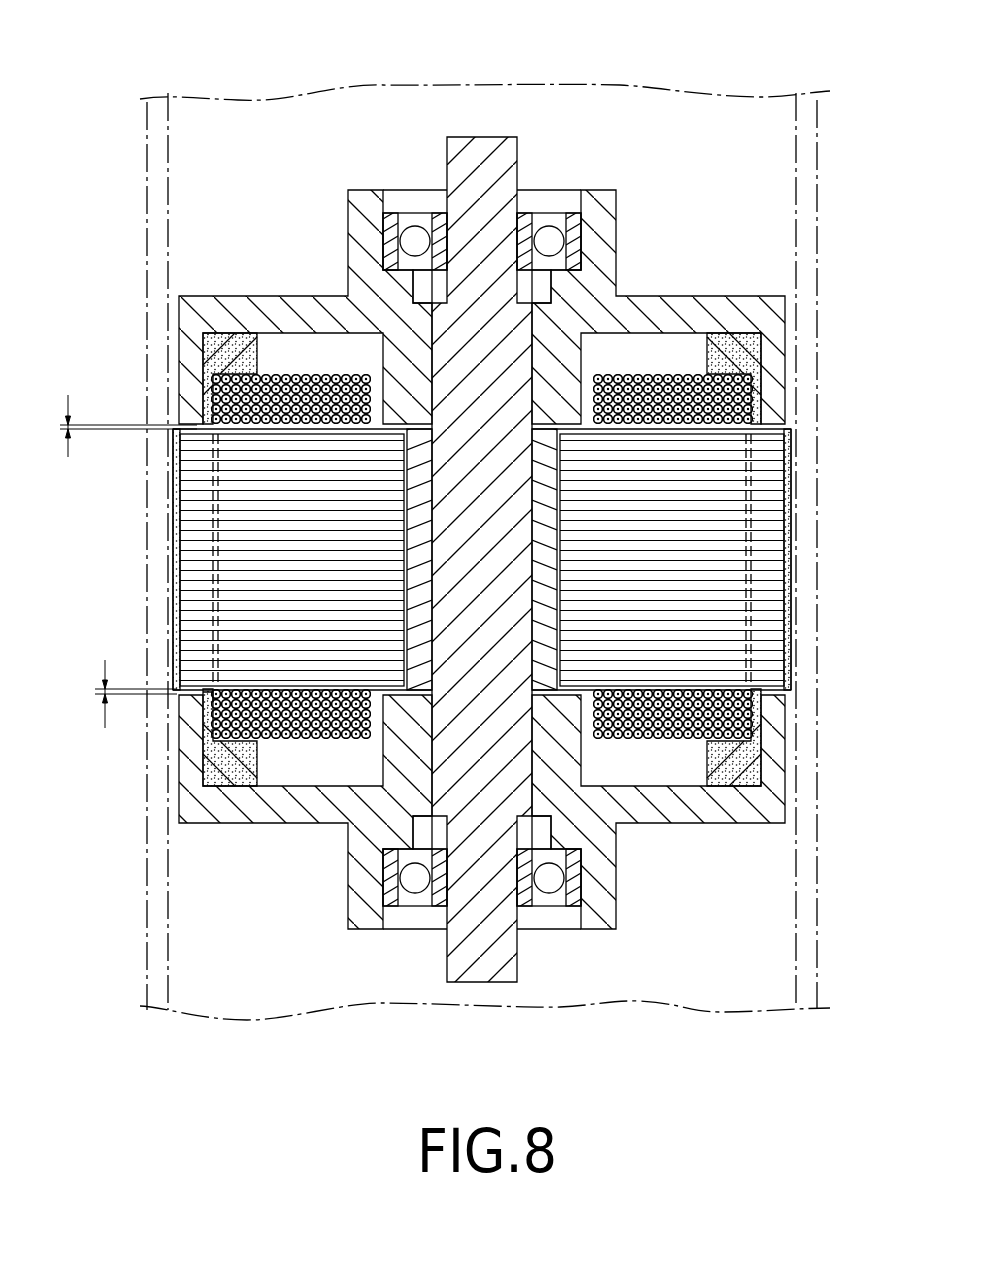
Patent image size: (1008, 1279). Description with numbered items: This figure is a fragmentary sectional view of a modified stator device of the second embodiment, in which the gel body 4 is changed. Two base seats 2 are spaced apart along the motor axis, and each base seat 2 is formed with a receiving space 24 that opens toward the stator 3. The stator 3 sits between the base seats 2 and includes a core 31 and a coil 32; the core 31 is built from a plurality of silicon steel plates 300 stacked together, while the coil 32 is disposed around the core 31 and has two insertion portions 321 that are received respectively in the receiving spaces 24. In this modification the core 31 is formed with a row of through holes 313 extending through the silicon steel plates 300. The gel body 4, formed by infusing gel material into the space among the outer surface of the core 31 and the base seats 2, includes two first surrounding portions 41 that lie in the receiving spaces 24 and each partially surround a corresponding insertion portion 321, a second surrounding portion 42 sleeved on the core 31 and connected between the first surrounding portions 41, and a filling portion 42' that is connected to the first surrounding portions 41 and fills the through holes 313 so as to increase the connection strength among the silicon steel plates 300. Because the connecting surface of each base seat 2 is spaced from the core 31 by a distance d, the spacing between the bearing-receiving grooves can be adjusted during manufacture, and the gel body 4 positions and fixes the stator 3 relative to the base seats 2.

The base seat 2 is at (531, 544).
The receiving space 24 is at (761, 377).
The stator 3 is at (419, 559).
The core 31 is at (188, 493).
The silicon steel plates 300 is at (185, 545).
The through holes 313 is at (212, 515).
The gel body 4 is at (423, 508).
The first surrounding portion 41 is at (203, 340).
The second surrounding portion 42 is at (423, 559).
The filling portion 42' is at (135, 726).
The coil 32 is at (411, 571).
The insertion portion 321 is at (203, 390).
The distance d is at (118, 561).